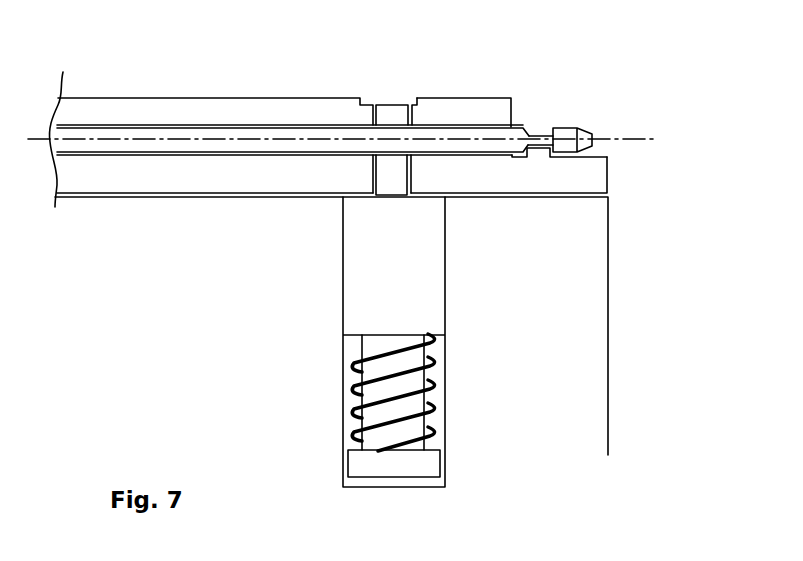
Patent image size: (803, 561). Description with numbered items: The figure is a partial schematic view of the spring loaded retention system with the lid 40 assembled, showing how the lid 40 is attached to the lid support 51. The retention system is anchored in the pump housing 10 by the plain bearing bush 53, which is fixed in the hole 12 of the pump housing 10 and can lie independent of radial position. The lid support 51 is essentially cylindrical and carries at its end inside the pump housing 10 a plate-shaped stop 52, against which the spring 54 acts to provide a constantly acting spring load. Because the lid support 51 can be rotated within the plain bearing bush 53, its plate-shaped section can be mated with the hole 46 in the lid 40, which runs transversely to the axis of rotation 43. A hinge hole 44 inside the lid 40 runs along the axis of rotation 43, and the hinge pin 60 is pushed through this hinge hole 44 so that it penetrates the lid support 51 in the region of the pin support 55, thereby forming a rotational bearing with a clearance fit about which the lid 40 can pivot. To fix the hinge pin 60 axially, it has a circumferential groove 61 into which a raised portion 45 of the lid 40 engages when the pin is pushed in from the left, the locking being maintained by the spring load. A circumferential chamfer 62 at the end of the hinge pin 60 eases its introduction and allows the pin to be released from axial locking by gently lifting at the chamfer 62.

The pump housing 10 is at (600, 333).
The hole 12 is at (445, 405).
The lid 40 is at (108, 100).
The axis of rotation 43 is at (643, 138).
The hinge hole 44 is at (193, 157).
The raised portion 45 is at (538, 152).
The hole 46 is at (415, 117).
The lid support 51 is at (381, 172).
The stop 52 is at (433, 463).
The plain bearing bush 53 is at (355, 283).
The spring 54 is at (355, 387).
The pin support 55 is at (391, 125).
The hinge pin 60 is at (205, 133).
The circumferential groove 61 is at (540, 137).
The circumferential chamfer 62 is at (590, 132).